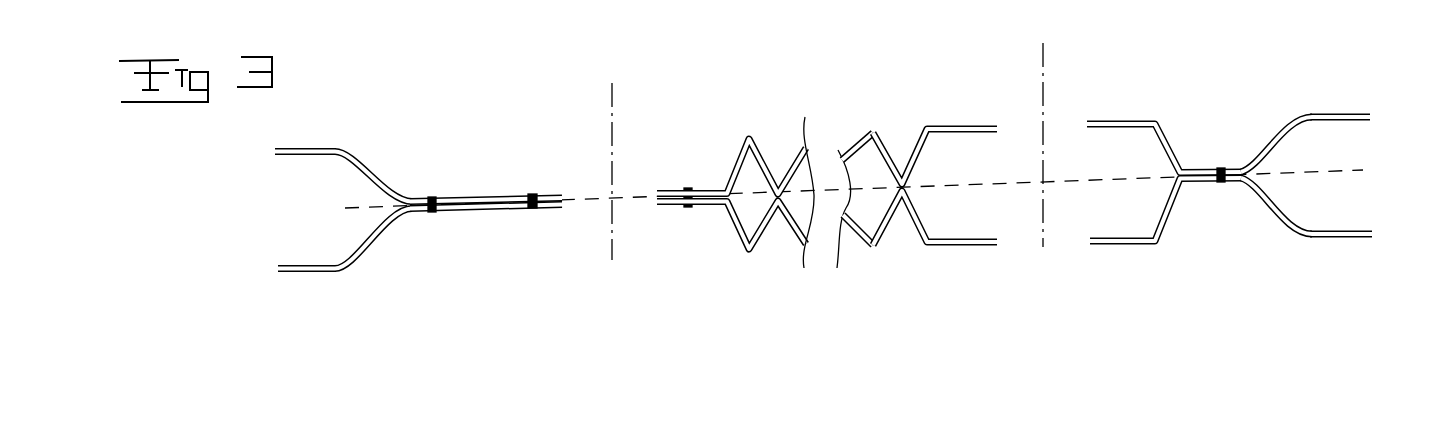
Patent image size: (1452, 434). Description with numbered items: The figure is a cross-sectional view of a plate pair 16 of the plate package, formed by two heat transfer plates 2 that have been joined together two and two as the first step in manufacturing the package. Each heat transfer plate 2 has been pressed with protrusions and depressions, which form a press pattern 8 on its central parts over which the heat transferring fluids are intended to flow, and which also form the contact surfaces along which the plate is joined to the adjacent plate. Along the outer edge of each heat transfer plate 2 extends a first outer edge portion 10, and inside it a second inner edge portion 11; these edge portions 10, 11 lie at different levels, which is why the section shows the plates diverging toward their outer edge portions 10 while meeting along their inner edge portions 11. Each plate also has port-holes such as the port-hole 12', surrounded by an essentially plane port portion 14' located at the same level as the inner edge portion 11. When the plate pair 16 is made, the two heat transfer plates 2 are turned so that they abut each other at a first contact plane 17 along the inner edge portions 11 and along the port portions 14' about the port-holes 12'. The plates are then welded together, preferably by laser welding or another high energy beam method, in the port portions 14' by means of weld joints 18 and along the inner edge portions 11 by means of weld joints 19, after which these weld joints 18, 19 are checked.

The heat transfer plate 2 is at (327, 153).
The press pattern 8 is at (872, 130).
The first outer edge portion 10 is at (298, 150).
The second inner edge portion 11 is at (450, 197).
The port-hole 12' is at (644, 194).
The port portion 14' is at (731, 168).
The plate pair 16 is at (910, 86).
The first contact plane 17 is at (1368, 173).
The weld joint 18 is at (533, 194).
The weld joint 19 is at (432, 197).